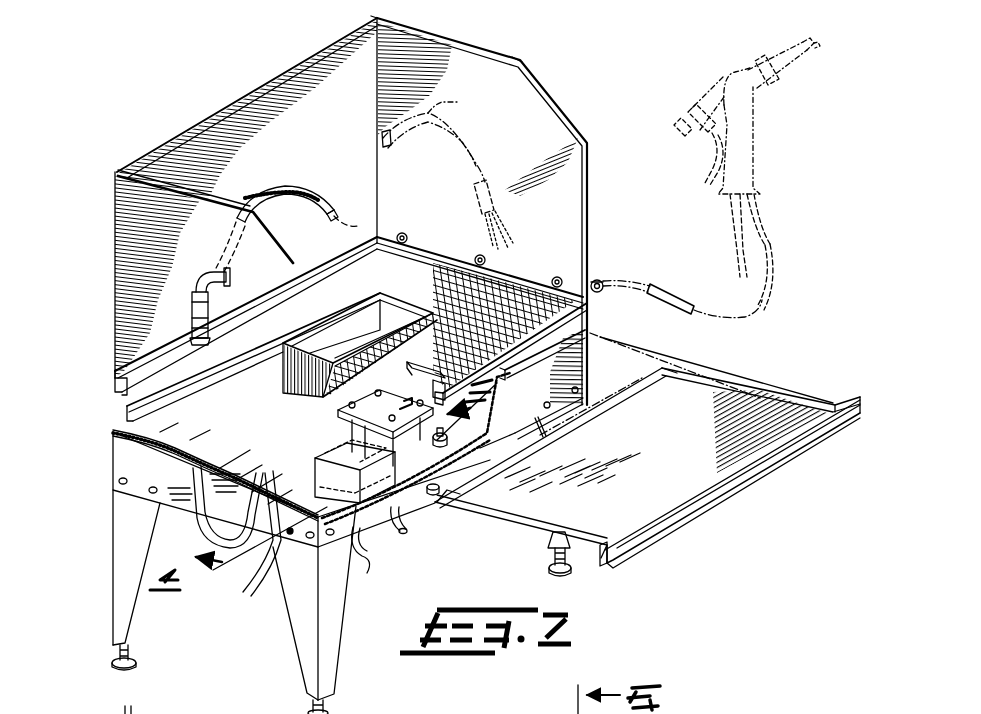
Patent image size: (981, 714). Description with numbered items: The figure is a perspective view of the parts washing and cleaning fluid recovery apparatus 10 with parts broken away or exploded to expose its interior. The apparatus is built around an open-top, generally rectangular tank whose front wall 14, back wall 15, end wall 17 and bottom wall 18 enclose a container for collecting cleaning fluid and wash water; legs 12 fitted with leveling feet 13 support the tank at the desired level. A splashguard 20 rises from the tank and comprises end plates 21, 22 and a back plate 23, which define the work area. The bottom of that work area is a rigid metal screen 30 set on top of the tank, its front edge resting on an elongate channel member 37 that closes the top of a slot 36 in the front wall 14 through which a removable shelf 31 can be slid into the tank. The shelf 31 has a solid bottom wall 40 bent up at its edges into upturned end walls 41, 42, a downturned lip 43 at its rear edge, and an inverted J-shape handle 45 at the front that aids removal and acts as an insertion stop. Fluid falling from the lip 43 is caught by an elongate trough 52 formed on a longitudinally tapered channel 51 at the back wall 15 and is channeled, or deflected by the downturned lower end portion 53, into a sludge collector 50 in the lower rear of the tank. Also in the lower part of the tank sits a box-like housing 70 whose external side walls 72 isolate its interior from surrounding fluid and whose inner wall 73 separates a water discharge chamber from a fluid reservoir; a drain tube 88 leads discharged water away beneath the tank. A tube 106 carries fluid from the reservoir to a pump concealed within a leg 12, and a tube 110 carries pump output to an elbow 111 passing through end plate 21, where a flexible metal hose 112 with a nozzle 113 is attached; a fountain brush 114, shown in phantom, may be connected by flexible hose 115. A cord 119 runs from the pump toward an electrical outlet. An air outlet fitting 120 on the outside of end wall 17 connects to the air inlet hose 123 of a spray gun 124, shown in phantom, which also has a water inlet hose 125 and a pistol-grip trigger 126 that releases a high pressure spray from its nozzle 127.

The parts washing and cleaning fluid recovery apparatus 10 is at (234, 86).
The splashguard 20 is at (305, 58).
The end plate 22 is at (481, 50).
The back plate 23 is at (203, 124).
The end plate 21 is at (141, 353).
The flexible metal hose 112 is at (248, 190).
The nozzle 113 is at (332, 208).
The elbow 111 is at (197, 280).
The flexible hose 115 is at (458, 102).
The fountain brush 114 is at (498, 208).
The end wall 17 is at (420, 262).
The elongate trough 52 is at (200, 396).
The longitudinally tapered channel 51 is at (162, 415).
The back wall 15 is at (222, 409).
The sludge collector 50 is at (389, 303).
The downturned lower end portion 53 is at (368, 310).
The bottom wall 18 is at (292, 400).
The rigid metal screen 30 is at (507, 284).
The elongate channel member 37 is at (550, 306).
The slot 36 is at (576, 327).
The front wall 14 is at (572, 362).
The air outlet fitting 120 is at (597, 278).
The tube 110 is at (208, 541).
The cord 119 is at (250, 592).
The legs 12 is at (137, 612).
The leveling feet 13 is at (132, 660).
The tube 106 is at (362, 552).
The inner wall 73 is at (352, 438).
The box-like housing 70 is at (314, 470).
The external side walls 72 is at (404, 478).
The drain tube 88 is at (398, 535).
The removable shelf 31 is at (733, 504).
The upturned end wall 42 is at (755, 392).
The bottom wall 40 is at (688, 390).
The handle 45 is at (773, 472).
The upturned end wall 41 is at (515, 524).
The downturned lip 43 is at (482, 474).
The spray gun 124 is at (762, 148).
The nozzle 127 is at (824, 46).
The pistol-grip trigger 126 is at (703, 165).
The water inlet hose 125 is at (728, 236).
The air inlet hose 123 is at (648, 288).